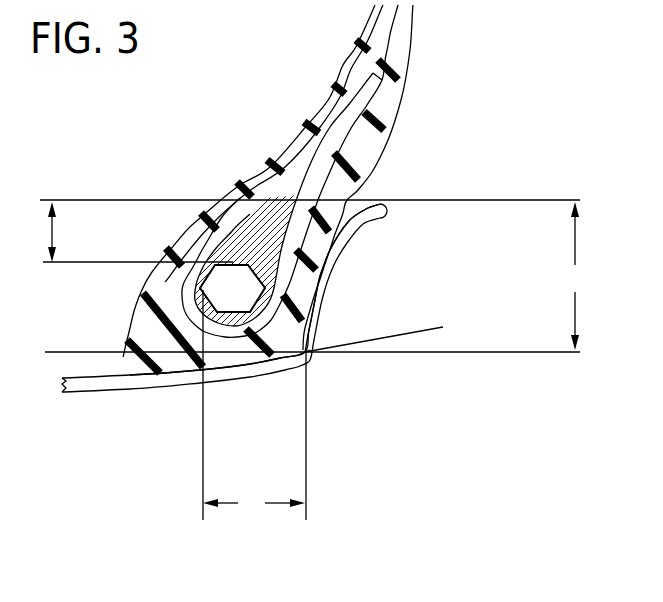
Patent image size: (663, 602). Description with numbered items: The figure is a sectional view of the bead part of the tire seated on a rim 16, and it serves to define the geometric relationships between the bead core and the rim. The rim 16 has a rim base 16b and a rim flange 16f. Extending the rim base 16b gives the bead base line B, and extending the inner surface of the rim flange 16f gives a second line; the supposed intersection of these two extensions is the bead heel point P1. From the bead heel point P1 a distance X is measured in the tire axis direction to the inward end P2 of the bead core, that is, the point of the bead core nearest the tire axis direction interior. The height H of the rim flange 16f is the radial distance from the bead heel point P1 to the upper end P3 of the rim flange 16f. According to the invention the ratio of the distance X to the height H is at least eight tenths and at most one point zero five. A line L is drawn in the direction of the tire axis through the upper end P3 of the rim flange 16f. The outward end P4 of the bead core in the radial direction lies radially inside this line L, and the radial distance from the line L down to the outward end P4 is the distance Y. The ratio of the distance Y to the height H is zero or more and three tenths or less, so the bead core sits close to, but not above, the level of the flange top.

The rim 16 is at (136, 402).
The rim base 16b is at (231, 361).
The rim flange 16f is at (333, 252).
The bead heel point P1 is at (305, 353).
The inward end in the tire axis direction of the bead core P2 is at (200, 292).
The upper end of the rim flange P3 is at (383, 200).
The outward end in the radial direction of the bead core P4 is at (231, 264).
The line L is at (138, 200).
The bead base line B is at (400, 336).
The height of the rim flange H is at (575, 276).
The distance X is at (254, 405).
The distance Y is at (50, 233).